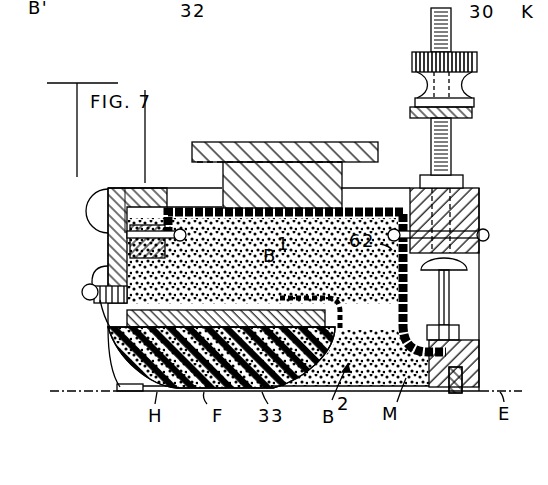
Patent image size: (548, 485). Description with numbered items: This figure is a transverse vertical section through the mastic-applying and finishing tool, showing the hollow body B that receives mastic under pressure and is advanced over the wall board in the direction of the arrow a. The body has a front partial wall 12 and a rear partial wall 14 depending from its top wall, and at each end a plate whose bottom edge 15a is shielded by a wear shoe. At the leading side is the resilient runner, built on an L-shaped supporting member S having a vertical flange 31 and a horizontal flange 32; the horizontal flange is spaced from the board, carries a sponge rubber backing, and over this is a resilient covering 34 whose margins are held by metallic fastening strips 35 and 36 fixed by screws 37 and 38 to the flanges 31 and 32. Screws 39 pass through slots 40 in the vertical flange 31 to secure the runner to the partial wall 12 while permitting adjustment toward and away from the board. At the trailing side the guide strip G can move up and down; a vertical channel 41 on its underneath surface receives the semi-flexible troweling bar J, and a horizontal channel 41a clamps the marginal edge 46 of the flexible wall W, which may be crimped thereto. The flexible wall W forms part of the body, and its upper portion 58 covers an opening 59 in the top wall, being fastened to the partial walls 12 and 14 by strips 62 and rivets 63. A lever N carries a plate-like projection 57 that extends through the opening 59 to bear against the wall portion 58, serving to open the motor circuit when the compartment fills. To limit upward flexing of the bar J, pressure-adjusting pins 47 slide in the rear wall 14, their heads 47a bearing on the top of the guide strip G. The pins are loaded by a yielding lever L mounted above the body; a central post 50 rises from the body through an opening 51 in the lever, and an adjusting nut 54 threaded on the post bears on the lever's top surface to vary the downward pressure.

The front partial wall 12 is at (141, 192).
The rear partial wall 14 is at (466, 188).
The bottom edge 15a is at (125, 392).
The vertical flange 31 is at (108, 249).
The horizontal flange 32 is at (233, 320).
The resilient covering 34 is at (105, 338).
The metallic fastening strip 35 is at (92, 279).
The metallic fastening strip 36 is at (342, 304).
The screw 37 is at (82, 298).
The screw 38 is at (296, 299).
The screw 39 is at (92, 203).
The slot 40 is at (108, 240).
The vertical channel 41 is at (481, 366).
The horizontal channel 41a is at (466, 343).
The marginal edge 46 is at (422, 366).
The pressure-adjusting pin 47 is at (450, 290).
The head 47a is at (460, 325).
The post 50 is at (452, 135).
The opening 51 is at (432, 112).
The adjusting nut 54 is at (412, 64).
The plate-like projection 57 is at (333, 181).
The upper portion of flexible wall 58 is at (390, 212).
The opening 59 is at (190, 198).
The strip 62 is at (166, 254).
The rivet 63 is at (186, 235).
The hollow body B is at (482, 208).
The lever N is at (279, 142).
The yielding lever L is at (478, 108).
The L-shaped supporting member S is at (109, 188).
The flexible wall W is at (397, 310).
The guide strip G is at (483, 381).
The troweling bar J is at (455, 393).
The arrow a is at (92, 323).